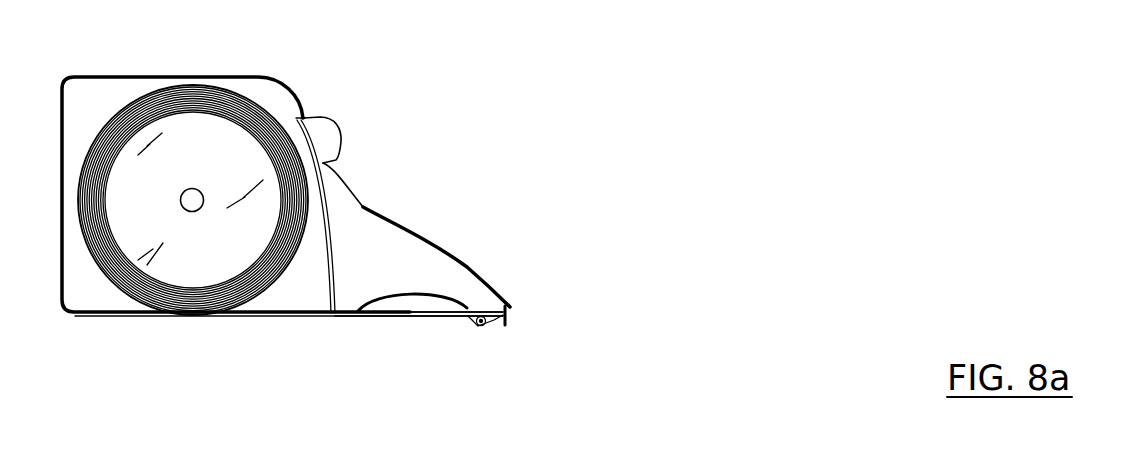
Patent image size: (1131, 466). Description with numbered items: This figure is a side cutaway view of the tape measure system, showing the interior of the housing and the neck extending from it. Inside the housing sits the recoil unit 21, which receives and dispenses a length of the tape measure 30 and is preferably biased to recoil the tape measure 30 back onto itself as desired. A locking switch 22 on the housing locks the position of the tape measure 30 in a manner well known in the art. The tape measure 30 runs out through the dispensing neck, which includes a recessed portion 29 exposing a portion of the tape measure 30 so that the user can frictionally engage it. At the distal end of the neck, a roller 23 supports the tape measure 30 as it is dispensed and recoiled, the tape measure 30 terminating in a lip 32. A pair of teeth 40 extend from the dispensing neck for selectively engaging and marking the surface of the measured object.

The recoil unit 21 is at (206, 142).
The locking switch 22 is at (320, 147).
The roller 23 is at (504, 324).
The recessed portion 29 is at (435, 300).
The tape measure 30 is at (408, 315).
The lip 32 is at (504, 320).
The teeth 40 is at (508, 307).